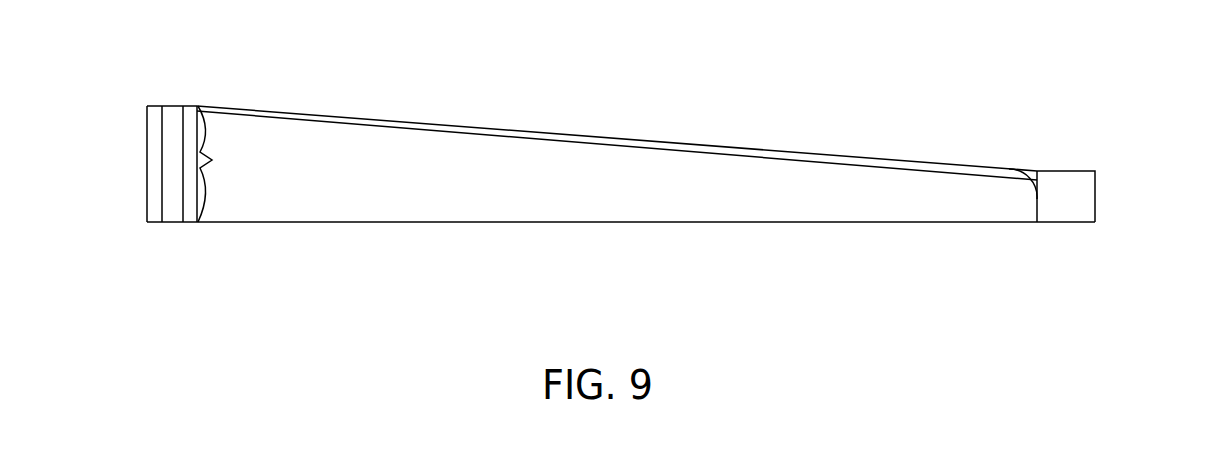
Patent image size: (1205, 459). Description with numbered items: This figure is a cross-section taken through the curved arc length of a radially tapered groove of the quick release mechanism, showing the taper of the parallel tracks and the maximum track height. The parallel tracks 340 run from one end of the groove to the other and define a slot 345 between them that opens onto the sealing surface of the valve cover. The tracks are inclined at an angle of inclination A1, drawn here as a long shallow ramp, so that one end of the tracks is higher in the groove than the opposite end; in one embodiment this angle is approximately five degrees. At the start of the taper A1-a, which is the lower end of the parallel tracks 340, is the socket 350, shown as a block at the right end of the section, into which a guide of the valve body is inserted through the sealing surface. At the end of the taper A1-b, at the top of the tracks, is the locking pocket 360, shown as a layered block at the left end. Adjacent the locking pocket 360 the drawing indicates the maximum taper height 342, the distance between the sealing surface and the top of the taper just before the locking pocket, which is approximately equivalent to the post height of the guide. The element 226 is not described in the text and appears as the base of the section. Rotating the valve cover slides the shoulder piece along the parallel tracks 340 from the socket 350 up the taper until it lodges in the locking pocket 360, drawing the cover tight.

The substrate 226 is at (618, 222).
The locking pocket 360 is at (148, 105).
The maximum taper height 342 is at (229, 164).
The parallel tracks 340 is at (743, 152).
The slot 345 is at (535, 170).
The socket 350 is at (1080, 193).
The angle of inclination A1 is at (1007, 189).
The start of the taper A1-a is at (1037, 172).
The end of the taper A1-b is at (196, 106).